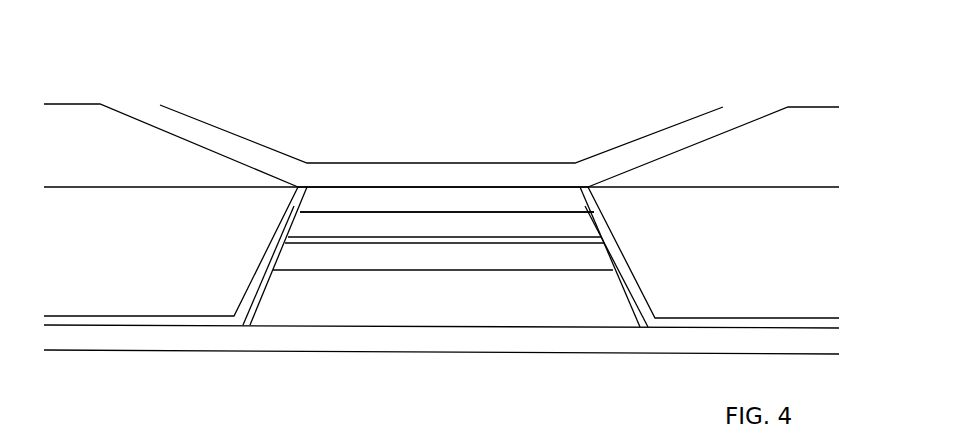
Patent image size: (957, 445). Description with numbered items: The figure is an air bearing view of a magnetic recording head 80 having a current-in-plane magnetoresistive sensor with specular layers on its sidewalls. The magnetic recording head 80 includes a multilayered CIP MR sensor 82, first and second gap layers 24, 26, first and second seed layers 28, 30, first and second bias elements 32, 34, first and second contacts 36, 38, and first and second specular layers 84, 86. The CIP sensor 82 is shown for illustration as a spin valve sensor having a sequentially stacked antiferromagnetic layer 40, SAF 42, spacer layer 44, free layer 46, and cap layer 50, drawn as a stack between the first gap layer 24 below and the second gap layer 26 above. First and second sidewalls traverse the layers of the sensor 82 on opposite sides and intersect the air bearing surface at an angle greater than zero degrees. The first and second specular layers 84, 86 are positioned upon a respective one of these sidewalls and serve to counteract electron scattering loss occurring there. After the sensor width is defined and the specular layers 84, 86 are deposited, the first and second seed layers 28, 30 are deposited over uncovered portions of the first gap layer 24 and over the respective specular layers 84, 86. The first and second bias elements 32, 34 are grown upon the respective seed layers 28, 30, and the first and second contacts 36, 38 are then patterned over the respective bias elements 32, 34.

The first gap layer 24 is at (122, 333).
The second gap layer 26 is at (210, 137).
The first seed layer 28 is at (193, 322).
The second seed layer 30 is at (715, 327).
The first bias element 32 is at (74, 292).
The second bias element 34 is at (838, 297).
The first contact 36 is at (77, 163).
The second contact 38 is at (838, 167).
The antiferromagnetic layer 40 is at (360, 293).
The SAF 42 is at (478, 262).
The spacer layer 44 is at (590, 242).
The free layer 46 is at (317, 225).
The cap layer 50 is at (425, 203).
The magnetic recording head 80 is at (827, 48).
The CIP MR sensor 82 is at (690, 223).
The first specular layer 84 is at (263, 280).
The second specular layer 86 is at (625, 292).